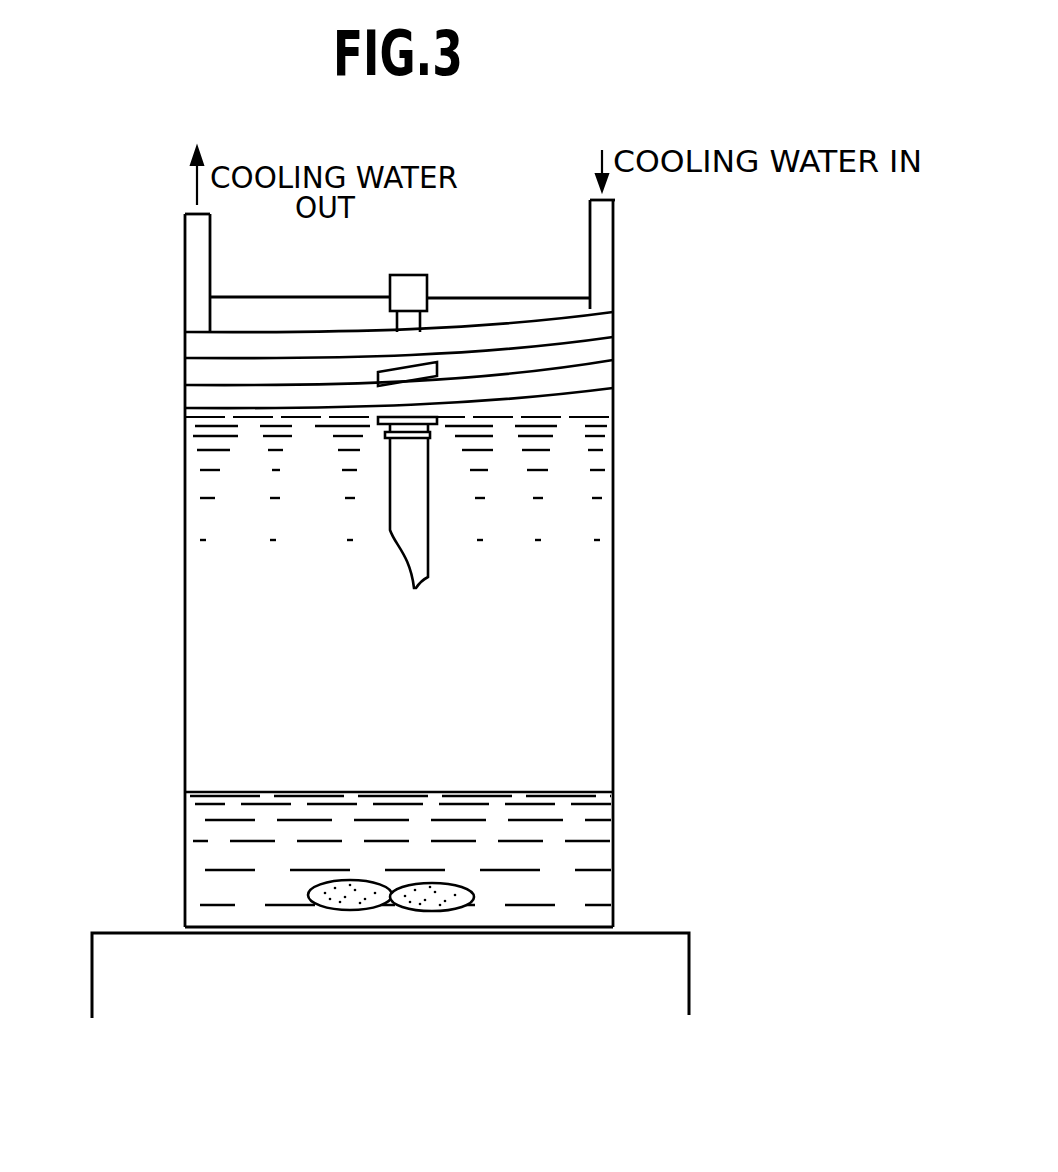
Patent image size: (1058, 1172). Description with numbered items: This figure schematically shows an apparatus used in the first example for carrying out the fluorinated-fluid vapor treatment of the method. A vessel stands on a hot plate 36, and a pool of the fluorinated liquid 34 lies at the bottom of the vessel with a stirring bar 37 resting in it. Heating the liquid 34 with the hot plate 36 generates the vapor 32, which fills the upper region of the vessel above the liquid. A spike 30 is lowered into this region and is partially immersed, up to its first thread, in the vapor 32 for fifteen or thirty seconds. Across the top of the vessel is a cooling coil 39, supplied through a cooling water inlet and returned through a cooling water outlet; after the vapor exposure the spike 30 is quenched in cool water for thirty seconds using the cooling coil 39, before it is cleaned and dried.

The spike 30 is at (418, 527).
The FC-71 vapor 32 is at (205, 632).
The FC-71 liquid 34 is at (200, 830).
The hot plate 36 is at (670, 985).
The stirring bar 37 is at (475, 888).
The cooling coil 39 is at (602, 328).